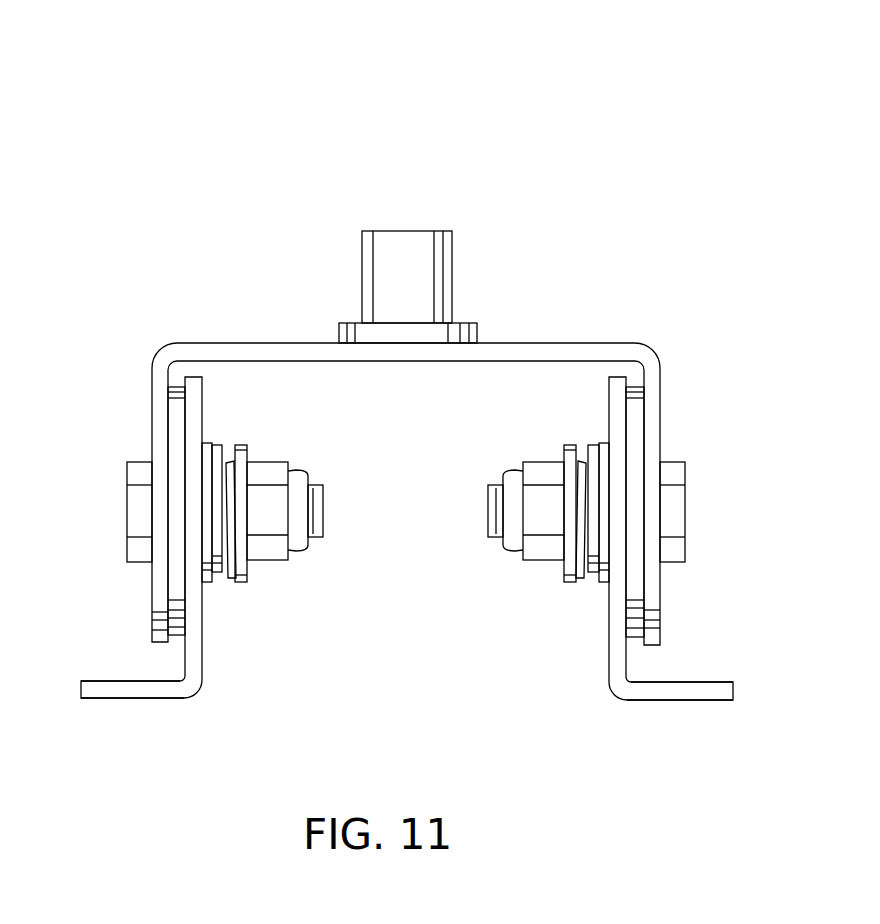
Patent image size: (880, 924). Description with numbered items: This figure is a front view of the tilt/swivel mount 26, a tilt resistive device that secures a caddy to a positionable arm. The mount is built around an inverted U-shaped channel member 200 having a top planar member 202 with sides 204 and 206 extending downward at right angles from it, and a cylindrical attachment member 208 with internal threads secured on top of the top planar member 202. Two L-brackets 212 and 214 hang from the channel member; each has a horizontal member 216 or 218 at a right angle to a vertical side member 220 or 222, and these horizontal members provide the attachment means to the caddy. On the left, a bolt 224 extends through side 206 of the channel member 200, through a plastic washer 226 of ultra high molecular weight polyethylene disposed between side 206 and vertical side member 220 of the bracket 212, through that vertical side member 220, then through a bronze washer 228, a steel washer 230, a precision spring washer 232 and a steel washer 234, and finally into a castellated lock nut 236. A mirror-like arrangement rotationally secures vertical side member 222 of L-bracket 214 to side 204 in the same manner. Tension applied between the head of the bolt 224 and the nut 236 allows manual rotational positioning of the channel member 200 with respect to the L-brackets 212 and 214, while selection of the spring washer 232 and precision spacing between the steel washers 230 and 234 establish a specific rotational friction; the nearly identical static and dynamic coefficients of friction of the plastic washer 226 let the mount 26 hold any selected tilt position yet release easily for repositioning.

The tilt/swivel mount 26 is at (663, 135).
The inverted U-shaped channel member 200 is at (570, 307).
The top planar member 202 is at (300, 352).
The side 204 is at (693, 511).
The side 206 is at (120, 518).
The cylindrical attachment member 208 is at (446, 245).
The L-bracket 212 is at (228, 667).
The L-bracket 214 is at (587, 668).
The horizontal member 216 is at (113, 707).
The horizontal member 218 is at (698, 707).
The vertical side member 220 is at (175, 534).
The vertical side member 222 is at (618, 393).
The bolt 224 is at (135, 508).
The plastic washer 226 is at (170, 388).
The bronze washer 228 is at (241, 538).
The steel washer 230 is at (274, 527).
The precision spring washer 232 is at (267, 485).
The steel washer 234 is at (276, 501).
The castellated lock nut 236 is at (318, 521).